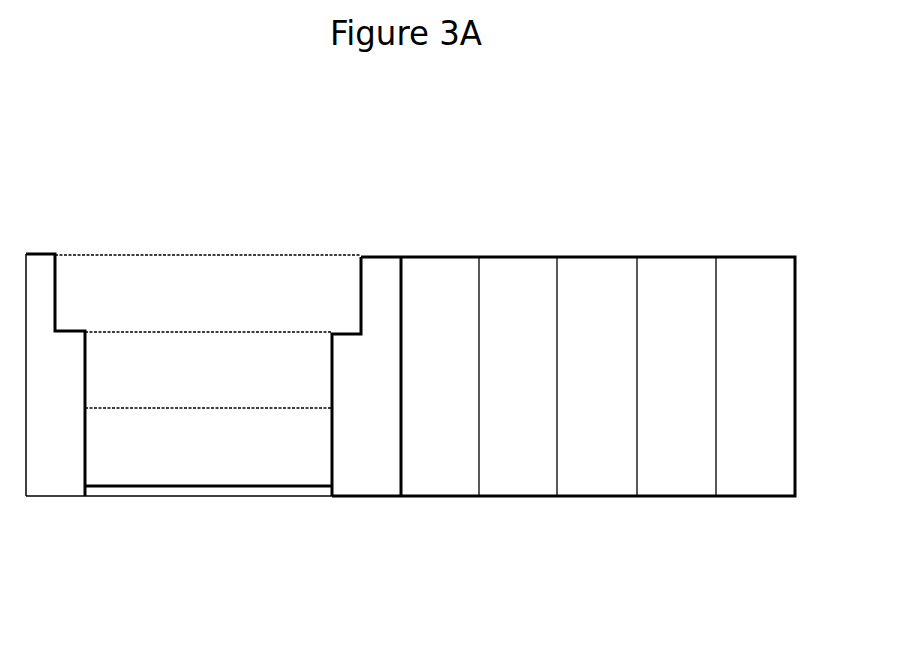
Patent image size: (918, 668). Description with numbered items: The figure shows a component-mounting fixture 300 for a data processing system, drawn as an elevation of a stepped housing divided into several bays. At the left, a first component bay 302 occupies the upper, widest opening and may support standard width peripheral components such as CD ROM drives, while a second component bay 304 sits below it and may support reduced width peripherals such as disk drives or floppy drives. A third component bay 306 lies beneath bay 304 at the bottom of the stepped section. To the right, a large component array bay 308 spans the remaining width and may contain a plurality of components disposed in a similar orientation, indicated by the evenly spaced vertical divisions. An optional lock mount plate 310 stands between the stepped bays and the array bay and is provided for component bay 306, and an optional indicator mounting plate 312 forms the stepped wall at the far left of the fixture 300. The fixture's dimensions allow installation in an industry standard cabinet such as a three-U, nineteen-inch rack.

The component-mounting fixture 300 is at (723, 251).
The first component bay 302 is at (145, 293).
The second component bay 304 is at (212, 372).
The third component bay 306 is at (222, 442).
The component array bay 308 is at (765, 475).
The lock mount plate 310 is at (360, 462).
The indicator mounting plate 312 is at (40, 455).